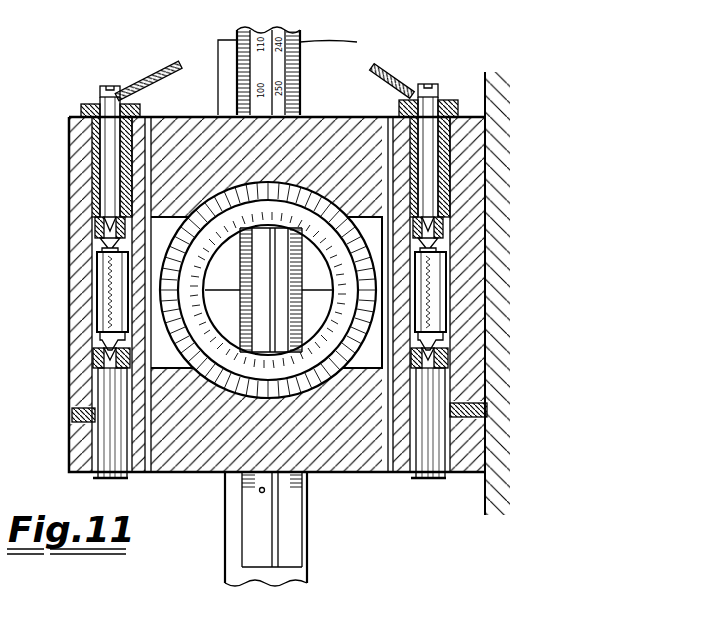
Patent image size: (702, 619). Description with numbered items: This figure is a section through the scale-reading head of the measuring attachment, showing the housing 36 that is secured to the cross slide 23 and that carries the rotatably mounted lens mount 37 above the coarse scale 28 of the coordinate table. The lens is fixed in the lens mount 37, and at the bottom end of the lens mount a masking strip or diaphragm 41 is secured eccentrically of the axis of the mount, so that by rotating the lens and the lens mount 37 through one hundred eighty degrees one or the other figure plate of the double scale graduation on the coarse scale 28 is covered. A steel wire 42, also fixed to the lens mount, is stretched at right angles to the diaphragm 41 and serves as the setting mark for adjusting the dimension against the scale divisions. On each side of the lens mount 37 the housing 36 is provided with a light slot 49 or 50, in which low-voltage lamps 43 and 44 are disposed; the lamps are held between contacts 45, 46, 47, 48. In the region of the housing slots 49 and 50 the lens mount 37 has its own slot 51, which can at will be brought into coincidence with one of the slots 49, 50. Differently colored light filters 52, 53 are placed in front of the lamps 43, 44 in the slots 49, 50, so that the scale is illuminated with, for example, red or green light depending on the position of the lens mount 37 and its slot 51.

The cross slide 23 is at (492, 97).
The coarse scale 28 is at (247, 535).
The housing 36 is at (80, 170).
The lens mount 37 is at (325, 385).
The masking strip or diaphragm 41 is at (283, 352).
The steel wire 42 is at (322, 288).
The low-voltage lamp 43 is at (113, 308).
The low-voltage lamp 44 is at (437, 318).
The contact 45 is at (110, 137).
The contact 46 is at (427, 147).
The contact 47 is at (107, 442).
The contact 48 is at (433, 450).
The light slot 49 is at (128, 370).
The light slot 50 is at (384, 362).
The slot 51 is at (177, 262).
The light filter 52 is at (147, 188).
The light filter 53 is at (393, 207).